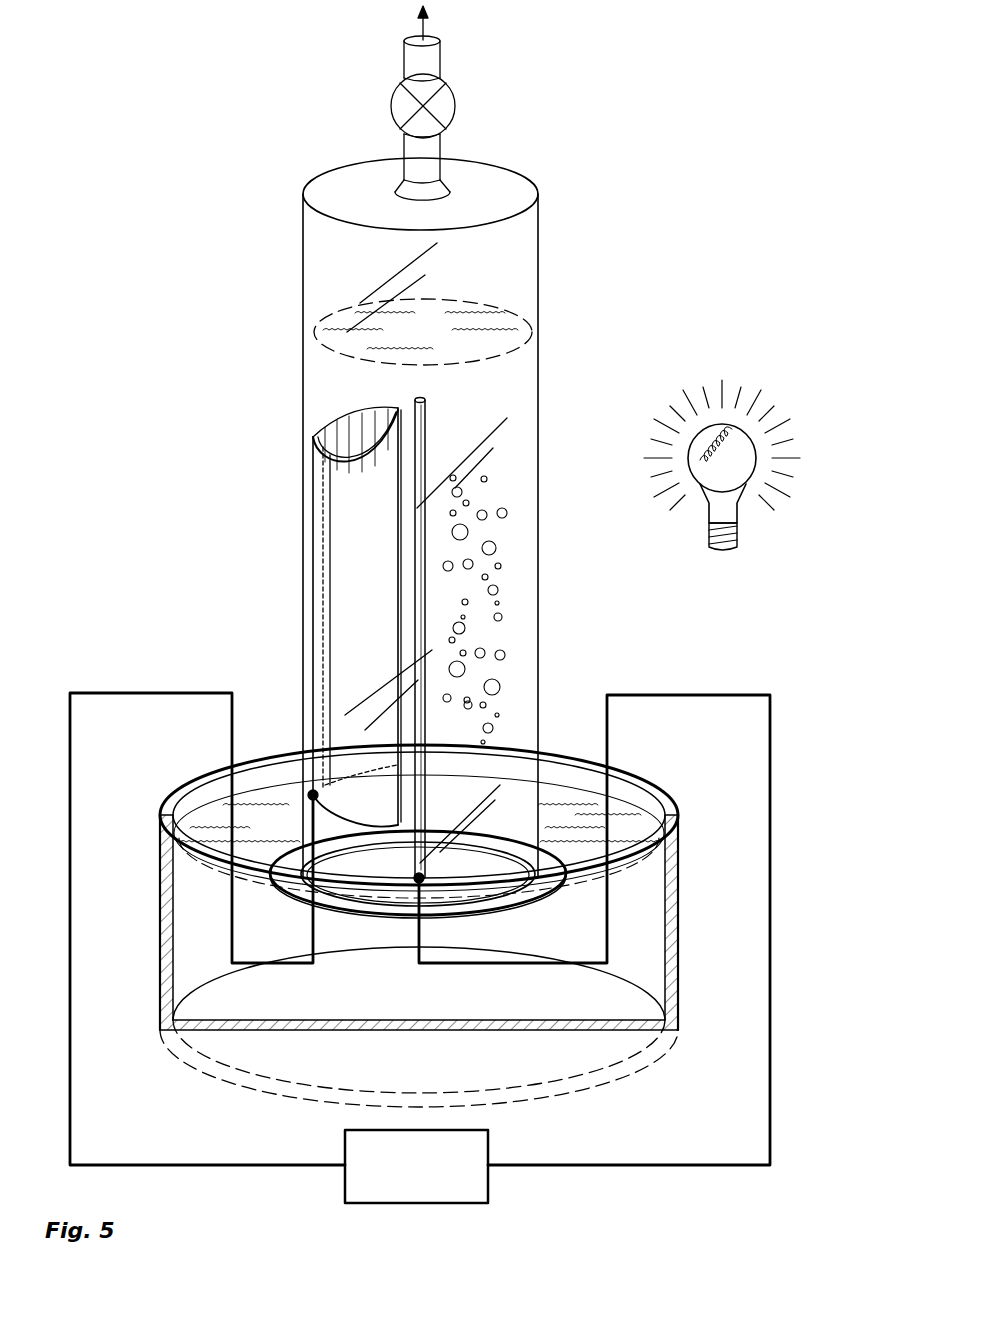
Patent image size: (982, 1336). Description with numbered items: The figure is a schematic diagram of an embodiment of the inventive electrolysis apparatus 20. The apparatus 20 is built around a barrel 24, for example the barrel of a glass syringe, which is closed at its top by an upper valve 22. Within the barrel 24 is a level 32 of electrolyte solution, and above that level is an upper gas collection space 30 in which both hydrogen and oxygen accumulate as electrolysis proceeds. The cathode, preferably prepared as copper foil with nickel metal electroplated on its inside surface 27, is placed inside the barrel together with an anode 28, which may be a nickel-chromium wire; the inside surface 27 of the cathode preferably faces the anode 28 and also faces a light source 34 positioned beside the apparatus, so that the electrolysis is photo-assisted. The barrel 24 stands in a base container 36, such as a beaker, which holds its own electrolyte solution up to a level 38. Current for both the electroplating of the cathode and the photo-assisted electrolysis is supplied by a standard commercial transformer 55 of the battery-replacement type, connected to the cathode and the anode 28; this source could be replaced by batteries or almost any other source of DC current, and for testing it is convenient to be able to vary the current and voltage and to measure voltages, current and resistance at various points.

The electrolysis apparatus 20 is at (278, 205).
The upper valve 22 is at (447, 103).
The barrel 24 is at (538, 183).
The inside surface 27 is at (345, 430).
The anode 28 is at (425, 437).
The upper gas collection space 30 is at (502, 283).
The level of electrolyte solution 32 is at (305, 323).
The light source 34 is at (740, 437).
The base container 36 is at (642, 780).
The level of electrolyte solution in base container 38 is at (567, 783).
The transformer 55 is at (483, 1150).